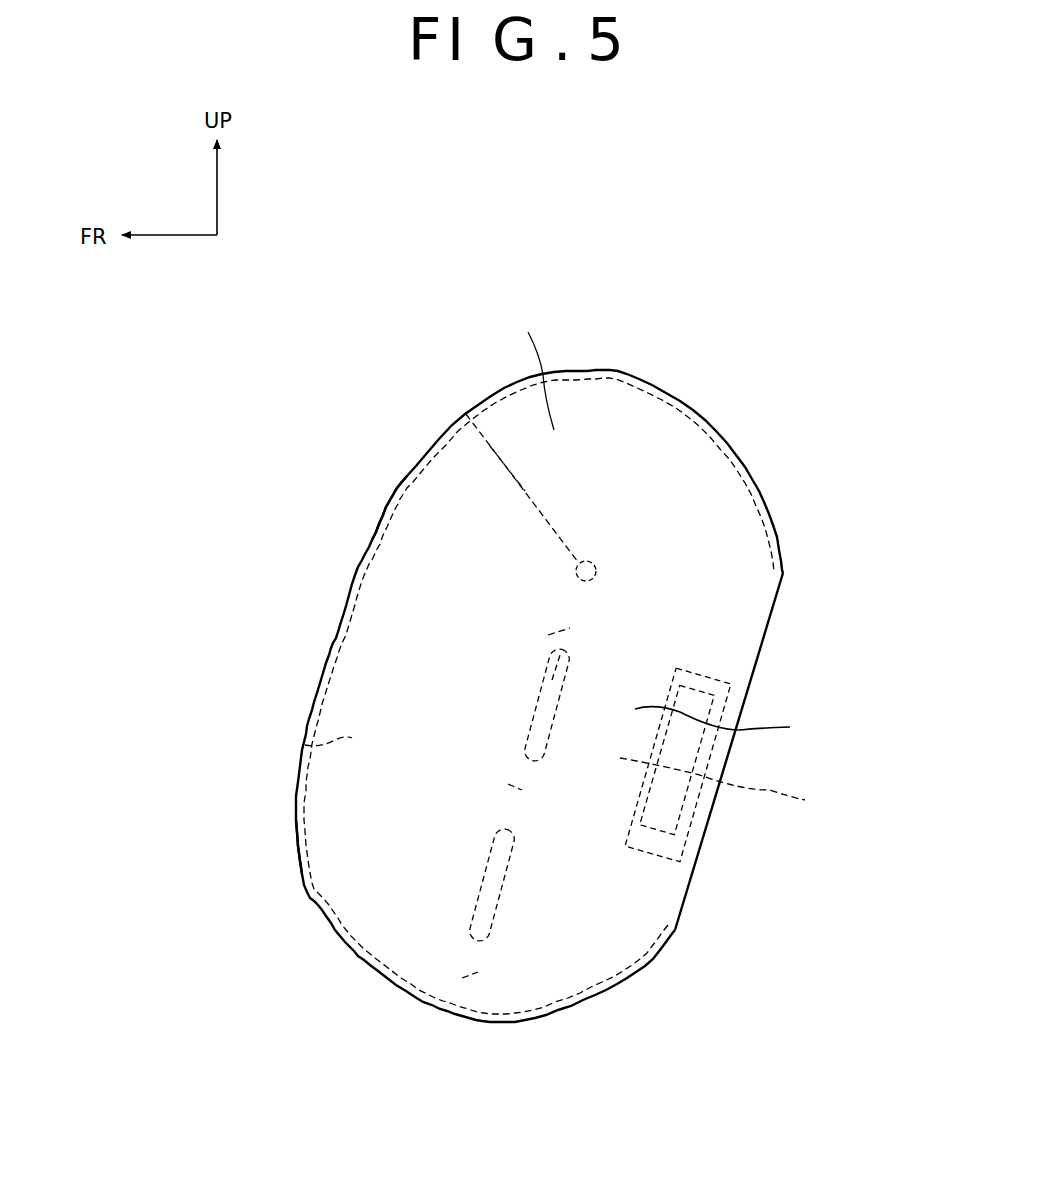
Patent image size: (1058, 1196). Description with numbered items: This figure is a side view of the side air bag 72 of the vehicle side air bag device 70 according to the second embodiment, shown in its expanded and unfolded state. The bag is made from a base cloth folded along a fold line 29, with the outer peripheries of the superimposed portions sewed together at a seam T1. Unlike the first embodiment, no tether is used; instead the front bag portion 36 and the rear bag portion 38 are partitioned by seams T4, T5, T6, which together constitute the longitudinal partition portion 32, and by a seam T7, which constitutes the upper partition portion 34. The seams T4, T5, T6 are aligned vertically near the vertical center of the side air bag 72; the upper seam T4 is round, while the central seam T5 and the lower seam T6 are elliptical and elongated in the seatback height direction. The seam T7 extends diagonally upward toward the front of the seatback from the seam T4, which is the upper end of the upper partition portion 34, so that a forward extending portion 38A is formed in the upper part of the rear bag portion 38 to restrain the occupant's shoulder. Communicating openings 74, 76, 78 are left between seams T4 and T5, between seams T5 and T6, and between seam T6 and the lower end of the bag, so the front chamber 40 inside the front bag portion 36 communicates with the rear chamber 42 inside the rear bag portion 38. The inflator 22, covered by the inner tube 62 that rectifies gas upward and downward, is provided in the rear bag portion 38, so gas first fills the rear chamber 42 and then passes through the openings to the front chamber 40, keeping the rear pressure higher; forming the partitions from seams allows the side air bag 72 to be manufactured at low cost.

The vehicle side air bag device 70 is at (695, 367).
The fold line 29 is at (768, 635).
The front bag portion 36 is at (370, 650).
The side air bag 72 is at (349, 567).
The forward extending portion 38A is at (528, 365).
The seam T1 is at (304, 885).
The front chamber 40 is at (298, 739).
The upper partition portion 34 is at (547, 512).
The seam T7 is at (508, 488).
The seam T4 is at (574, 572).
The communicating opening 74 is at (565, 625).
The longitudinal partition portion 32 is at (513, 745).
The seam T5 is at (542, 678).
The communicating opening 76 is at (515, 788).
The seam T6 is at (483, 866).
The communicating opening 78 is at (470, 975).
The inflator 22 is at (712, 812).
The inner tube 62 is at (702, 862).
The rear bag portion 38 is at (733, 725).
The rear chamber 42 is at (734, 786).